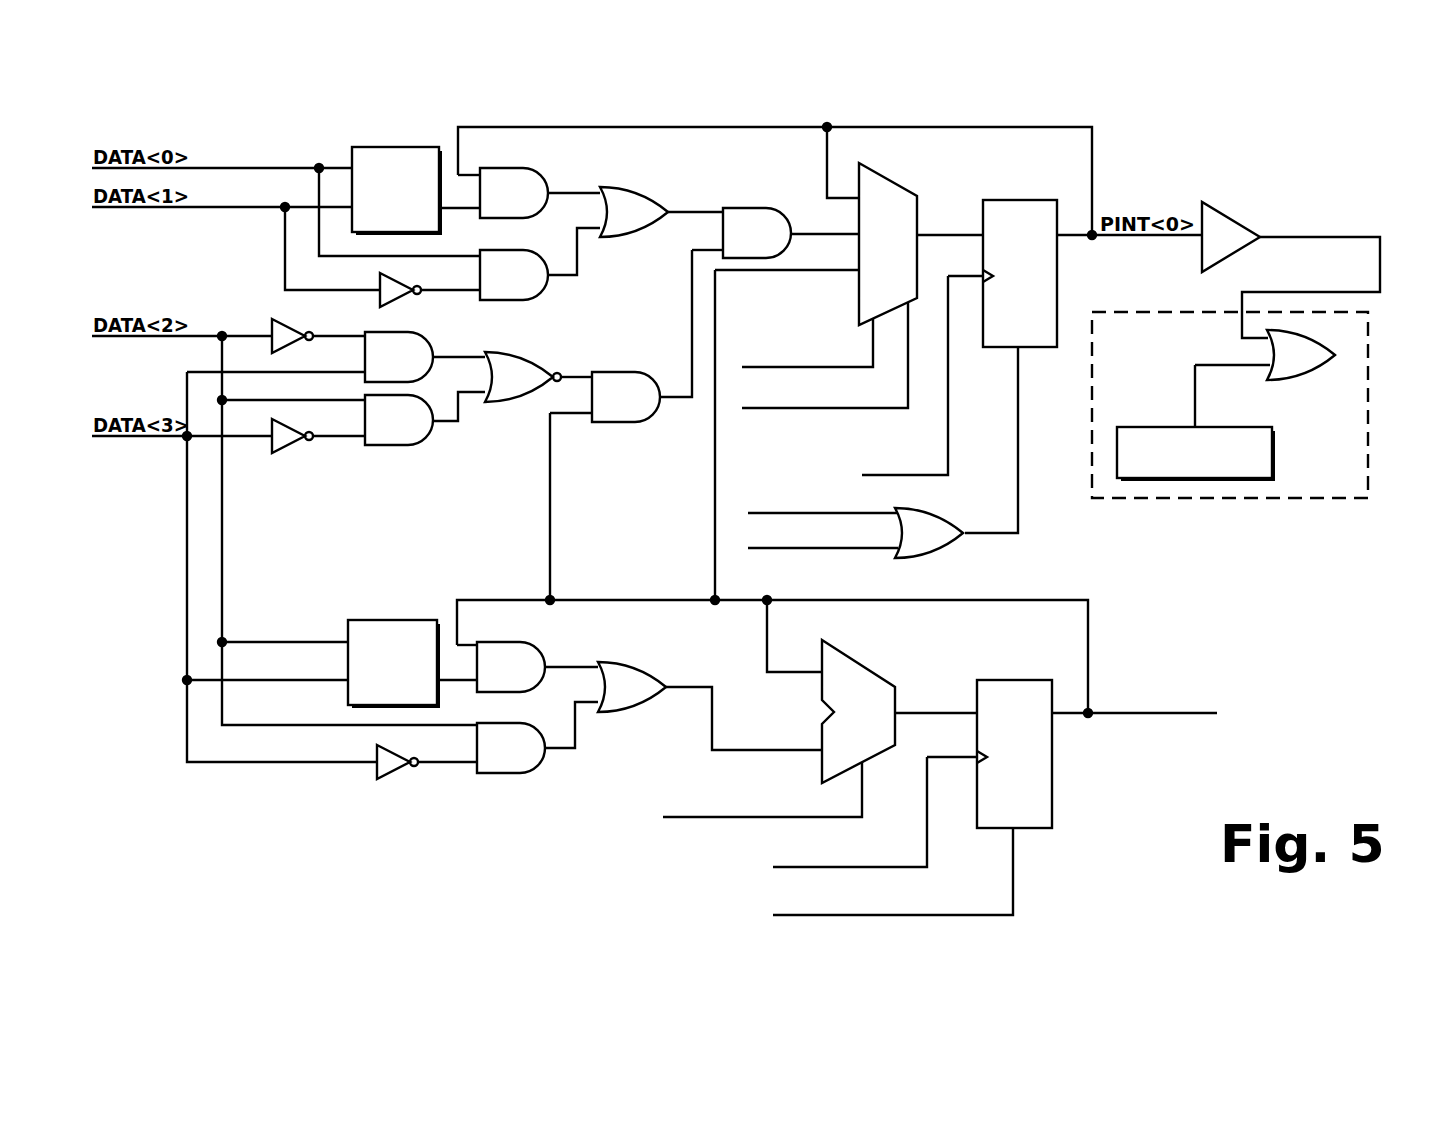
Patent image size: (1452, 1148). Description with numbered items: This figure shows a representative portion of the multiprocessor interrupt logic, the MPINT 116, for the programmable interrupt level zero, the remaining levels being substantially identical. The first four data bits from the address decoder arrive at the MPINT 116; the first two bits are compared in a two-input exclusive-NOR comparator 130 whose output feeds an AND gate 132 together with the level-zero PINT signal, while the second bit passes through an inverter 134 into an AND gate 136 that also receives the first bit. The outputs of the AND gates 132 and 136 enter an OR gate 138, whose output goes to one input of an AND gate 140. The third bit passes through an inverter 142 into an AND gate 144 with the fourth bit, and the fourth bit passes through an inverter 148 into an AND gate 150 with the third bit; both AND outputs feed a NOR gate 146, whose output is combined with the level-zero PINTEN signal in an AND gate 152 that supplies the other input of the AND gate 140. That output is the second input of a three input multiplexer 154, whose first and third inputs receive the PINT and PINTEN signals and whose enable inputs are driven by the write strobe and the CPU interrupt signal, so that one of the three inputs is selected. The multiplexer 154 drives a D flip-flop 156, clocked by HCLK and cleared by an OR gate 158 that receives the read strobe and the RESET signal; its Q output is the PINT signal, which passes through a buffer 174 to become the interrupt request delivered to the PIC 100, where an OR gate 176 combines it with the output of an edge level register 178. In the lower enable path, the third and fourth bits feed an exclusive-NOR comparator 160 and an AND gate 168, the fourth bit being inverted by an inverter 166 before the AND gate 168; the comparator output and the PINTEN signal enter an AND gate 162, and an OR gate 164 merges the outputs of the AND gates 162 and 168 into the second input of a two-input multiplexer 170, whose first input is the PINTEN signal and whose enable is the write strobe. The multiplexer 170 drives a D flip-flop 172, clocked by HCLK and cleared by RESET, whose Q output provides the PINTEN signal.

The PIC 100 is at (1372, 382).
The MPINT 116 is at (1142, 152).
The exclusive-NOR comparator 130 is at (384, 147).
The AND gate 132 is at (508, 170).
The inverter 134 is at (404, 300).
The AND gate 136 is at (528, 300).
The OR gate 138 is at (622, 238).
The AND gate 140 is at (738, 208).
The inverter 142 is at (268, 324).
The AND gate 144 is at (372, 332).
The NOR gate 146 is at (508, 402).
The inverter 148 is at (296, 452).
The AND gate 150 is at (398, 448).
The AND gate 152 is at (622, 372).
The three input multiplexer 154 is at (880, 178).
The D flip-flop 156 is at (1005, 200).
The OR gate 158 is at (926, 558).
The exclusive-NOR comparator 160 is at (385, 620).
The AND gate 162 is at (542, 654).
The OR gate 164 is at (628, 714).
The inverter 166 is at (395, 778).
The AND gate 168 is at (540, 772).
The two-input multiplexer 170 is at (862, 668).
The D flip-flop 172 is at (1054, 760).
The buffer 174 is at (1225, 212).
The OR gate 176 is at (1302, 380).
The edge level register 178 is at (1180, 427).